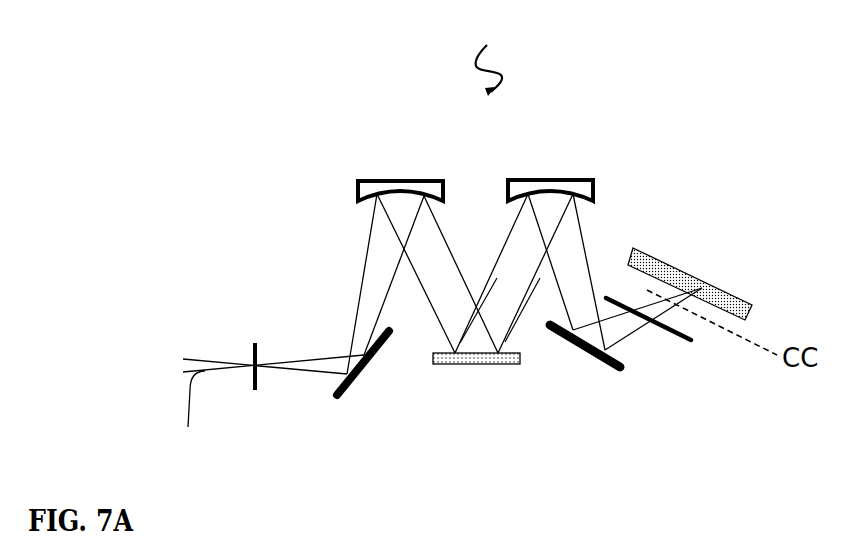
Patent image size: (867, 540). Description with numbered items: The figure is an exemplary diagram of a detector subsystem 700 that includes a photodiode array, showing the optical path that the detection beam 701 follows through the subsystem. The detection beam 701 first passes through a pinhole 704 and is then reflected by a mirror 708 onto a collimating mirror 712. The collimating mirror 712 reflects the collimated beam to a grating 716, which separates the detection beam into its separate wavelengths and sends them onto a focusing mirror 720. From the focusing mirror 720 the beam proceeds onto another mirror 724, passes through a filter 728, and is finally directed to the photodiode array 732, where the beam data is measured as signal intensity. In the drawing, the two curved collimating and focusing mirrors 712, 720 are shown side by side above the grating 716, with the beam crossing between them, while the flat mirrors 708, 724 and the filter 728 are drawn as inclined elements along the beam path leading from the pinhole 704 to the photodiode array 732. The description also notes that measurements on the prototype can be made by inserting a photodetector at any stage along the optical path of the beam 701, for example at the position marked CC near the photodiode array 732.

The detector subsystem 700 is at (495, 53).
The detection beam 701 is at (191, 412).
The pinhole 704 is at (252, 353).
The mirror 708 is at (342, 393).
The collimating mirror 712 is at (368, 178).
The grating 716 is at (487, 364).
The focusing mirror 720 is at (562, 177).
The mirror 724 is at (597, 365).
The filter 728 is at (678, 337).
The photodiode array 732 is at (731, 293).